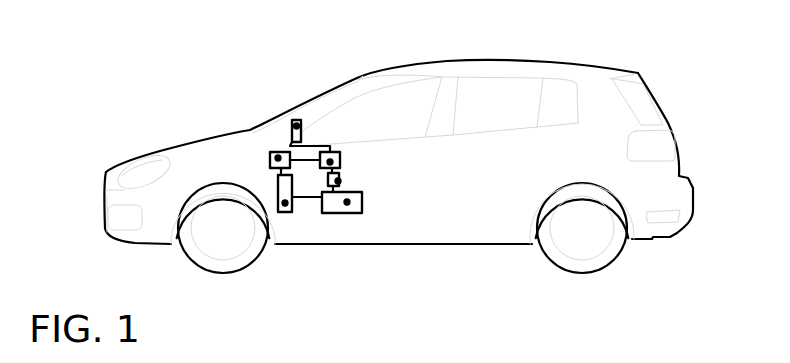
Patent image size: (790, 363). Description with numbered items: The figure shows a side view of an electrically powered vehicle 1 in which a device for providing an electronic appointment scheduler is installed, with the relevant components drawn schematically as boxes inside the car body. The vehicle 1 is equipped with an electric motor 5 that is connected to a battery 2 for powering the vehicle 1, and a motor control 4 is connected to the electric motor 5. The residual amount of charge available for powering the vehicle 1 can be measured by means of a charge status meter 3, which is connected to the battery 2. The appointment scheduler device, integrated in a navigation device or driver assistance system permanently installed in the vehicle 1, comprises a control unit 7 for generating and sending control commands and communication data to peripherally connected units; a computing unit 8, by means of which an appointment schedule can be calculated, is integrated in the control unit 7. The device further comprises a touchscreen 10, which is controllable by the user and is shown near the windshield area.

The electrically powered vehicle 1 is at (267, 95).
The battery 2 is at (347, 202).
The charge status meter 3 is at (338, 181).
The motor control 4 is at (270, 153).
The electric motor 5 is at (285, 203).
The control unit 7 is at (369, 160).
The computing unit 8 is at (340, 160).
The touchscreen 10 is at (297, 118).